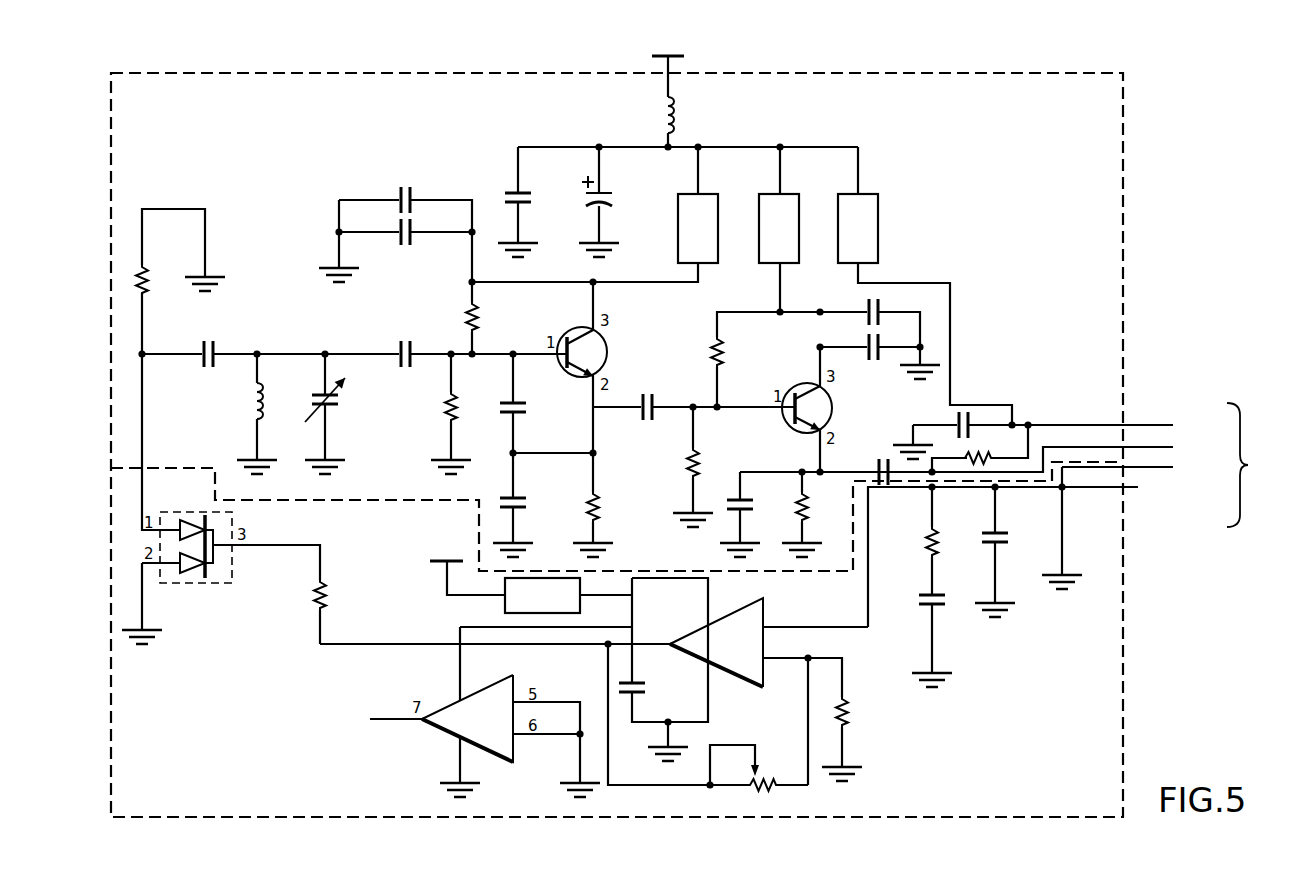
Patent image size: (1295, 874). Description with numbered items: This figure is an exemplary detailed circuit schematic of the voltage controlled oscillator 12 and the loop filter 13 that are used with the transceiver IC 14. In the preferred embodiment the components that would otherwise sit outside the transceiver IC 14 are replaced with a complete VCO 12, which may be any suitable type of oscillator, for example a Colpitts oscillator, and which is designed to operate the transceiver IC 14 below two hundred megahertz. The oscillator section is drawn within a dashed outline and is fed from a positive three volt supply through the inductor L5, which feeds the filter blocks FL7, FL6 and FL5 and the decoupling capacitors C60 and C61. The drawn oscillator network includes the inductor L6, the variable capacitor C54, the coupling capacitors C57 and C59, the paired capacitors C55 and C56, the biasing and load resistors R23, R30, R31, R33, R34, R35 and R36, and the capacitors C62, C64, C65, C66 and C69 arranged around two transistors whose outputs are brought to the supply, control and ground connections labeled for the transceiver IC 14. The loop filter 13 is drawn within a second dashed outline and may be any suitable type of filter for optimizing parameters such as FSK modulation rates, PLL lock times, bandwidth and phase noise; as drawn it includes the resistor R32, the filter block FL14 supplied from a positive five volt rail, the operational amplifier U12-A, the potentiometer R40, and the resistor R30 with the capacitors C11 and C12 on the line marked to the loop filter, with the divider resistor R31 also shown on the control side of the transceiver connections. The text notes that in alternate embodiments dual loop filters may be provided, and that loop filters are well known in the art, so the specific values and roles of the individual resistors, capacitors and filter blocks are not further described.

The voltage controlled oscillator 12 is at (1123, 118).
The loop filter 13 is at (1123, 672).
The transceiver IC 14 is at (1176, 465).
The inductor L5 is at (661, 89).
The inductor L6 is at (249, 414).
The resistor R23 is at (180, 281).
The resistor R30 is at (709, 484).
The resistor R31 is at (729, 414).
The resistor R32 is at (292, 594).
The resistor R33 is at (610, 482).
The resistor R34 is at (709, 467).
The resistor R35 is at (797, 546).
The resistor R36 is at (815, 514).
The potentiometer R40 is at (708, 731).
The capacitor C11 is at (959, 583).
The capacitor C12 is at (1009, 552).
The variable capacitor C54 is at (346, 414).
The capacitor C55 is at (405, 227).
The capacitor C56 is at (397, 241).
The capacitor C57 is at (204, 344).
The capacitor C59 is at (402, 344).
The capacitor C60 is at (835, 316).
The capacitor C61 is at (568, 352).
The capacitor C62 is at (548, 405).
The capacitor C64 is at (694, 396).
The capacitor C65 is at (870, 318).
The capacitor C66 is at (878, 352).
The capacitor C69 is at (750, 514).
The filter FL5 is at (925, 286).
The filter FL6 is at (779, 229).
The filter FL7 is at (595, 214).
The filter FL14 is at (527, 575).
The operational amplifier U12-A is at (594, 669).